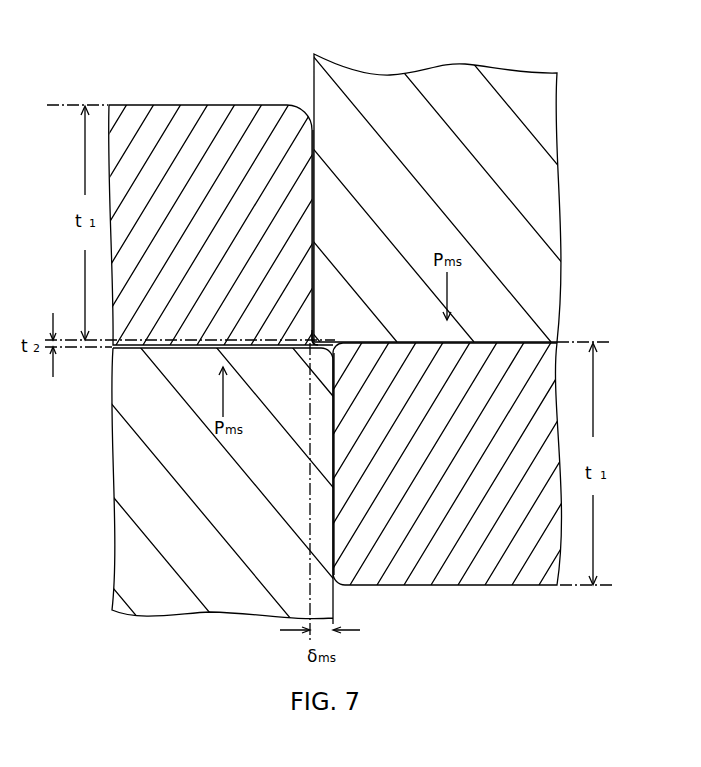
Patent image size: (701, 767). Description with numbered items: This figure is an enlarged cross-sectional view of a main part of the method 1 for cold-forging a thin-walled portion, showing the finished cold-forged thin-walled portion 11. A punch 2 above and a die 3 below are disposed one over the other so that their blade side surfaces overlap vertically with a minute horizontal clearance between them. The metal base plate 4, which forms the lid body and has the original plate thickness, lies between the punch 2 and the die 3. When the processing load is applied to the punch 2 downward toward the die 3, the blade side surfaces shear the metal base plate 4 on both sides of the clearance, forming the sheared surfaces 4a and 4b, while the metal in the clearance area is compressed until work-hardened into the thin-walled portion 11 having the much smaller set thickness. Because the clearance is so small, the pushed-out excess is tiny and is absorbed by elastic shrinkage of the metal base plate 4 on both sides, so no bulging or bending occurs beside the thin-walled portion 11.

The method for cold-forging a thin-walled portion 1 is at (178, 78).
The punch 2 is at (537, 117).
The die 3 is at (130, 478).
The metal base plate 4 is at (238, 128).
The sheared surface 4a is at (315, 208).
The sheared surface 4b is at (333, 527).
The thin-walled portion 11 is at (316, 340).